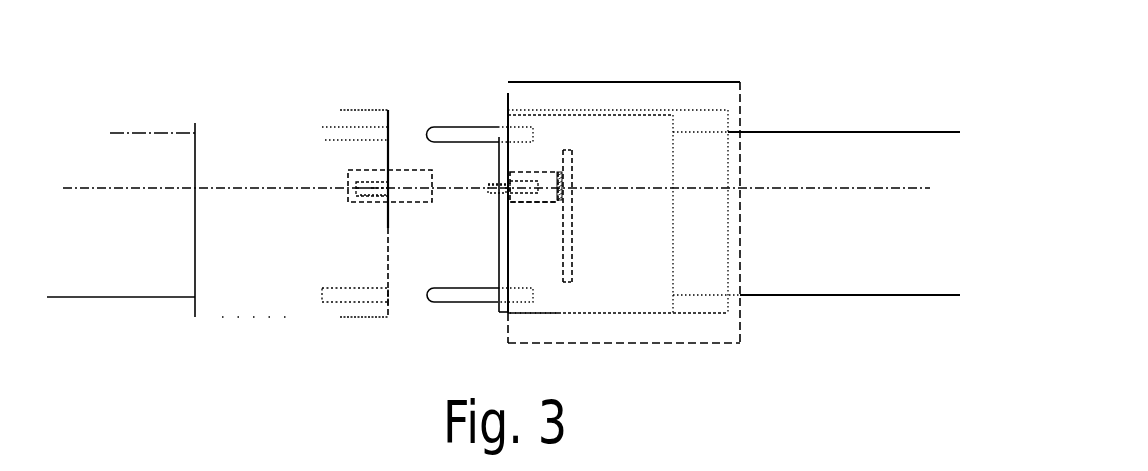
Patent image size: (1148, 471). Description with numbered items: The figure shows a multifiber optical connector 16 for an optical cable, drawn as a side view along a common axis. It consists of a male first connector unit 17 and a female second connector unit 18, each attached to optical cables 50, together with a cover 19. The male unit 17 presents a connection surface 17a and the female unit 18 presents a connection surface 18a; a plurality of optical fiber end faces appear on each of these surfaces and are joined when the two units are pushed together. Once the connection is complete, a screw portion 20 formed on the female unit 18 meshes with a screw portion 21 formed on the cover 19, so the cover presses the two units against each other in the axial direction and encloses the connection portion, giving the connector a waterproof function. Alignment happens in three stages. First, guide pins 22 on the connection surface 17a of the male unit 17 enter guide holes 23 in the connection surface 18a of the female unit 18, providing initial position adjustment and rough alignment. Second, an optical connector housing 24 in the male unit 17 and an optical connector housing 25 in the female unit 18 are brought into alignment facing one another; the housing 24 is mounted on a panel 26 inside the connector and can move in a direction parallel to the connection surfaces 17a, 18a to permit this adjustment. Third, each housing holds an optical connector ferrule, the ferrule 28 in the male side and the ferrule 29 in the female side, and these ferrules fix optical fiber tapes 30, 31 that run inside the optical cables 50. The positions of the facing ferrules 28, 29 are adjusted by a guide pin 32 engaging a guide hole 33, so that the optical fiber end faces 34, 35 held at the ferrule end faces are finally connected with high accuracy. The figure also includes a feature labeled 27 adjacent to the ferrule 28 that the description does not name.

The optical connector 16 is at (741, 64).
The first connector unit 17 is at (653, 313).
The connection surface 17a is at (498, 246).
The second connector unit 18 is at (213, 322).
The connection surface 18a is at (390, 253).
The cover 19 is at (622, 82).
The screw portion 20 is at (368, 319).
The screw portion 21 is at (535, 313).
The guide pins 22 is at (480, 126).
The guide holes 23 is at (390, 134).
The optical connector housing 24 is at (512, 172).
The optical connector housing 25 is at (366, 174).
The panel 26 is at (573, 278).
The seal 27 is at (558, 171).
The optical connector ferrule 28 is at (524, 203).
The optical connector ferrule 29 is at (358, 184).
The optical fiber tape 30 is at (834, 190).
The optical fiber tape 31 is at (122, 190).
The guide pin 32 is at (492, 194).
The guide hole 33 is at (382, 196).
The optical fiber end face 34 is at (508, 184).
The optical fiber end face 35 is at (388, 184).
The optical cables 50 is at (840, 131).